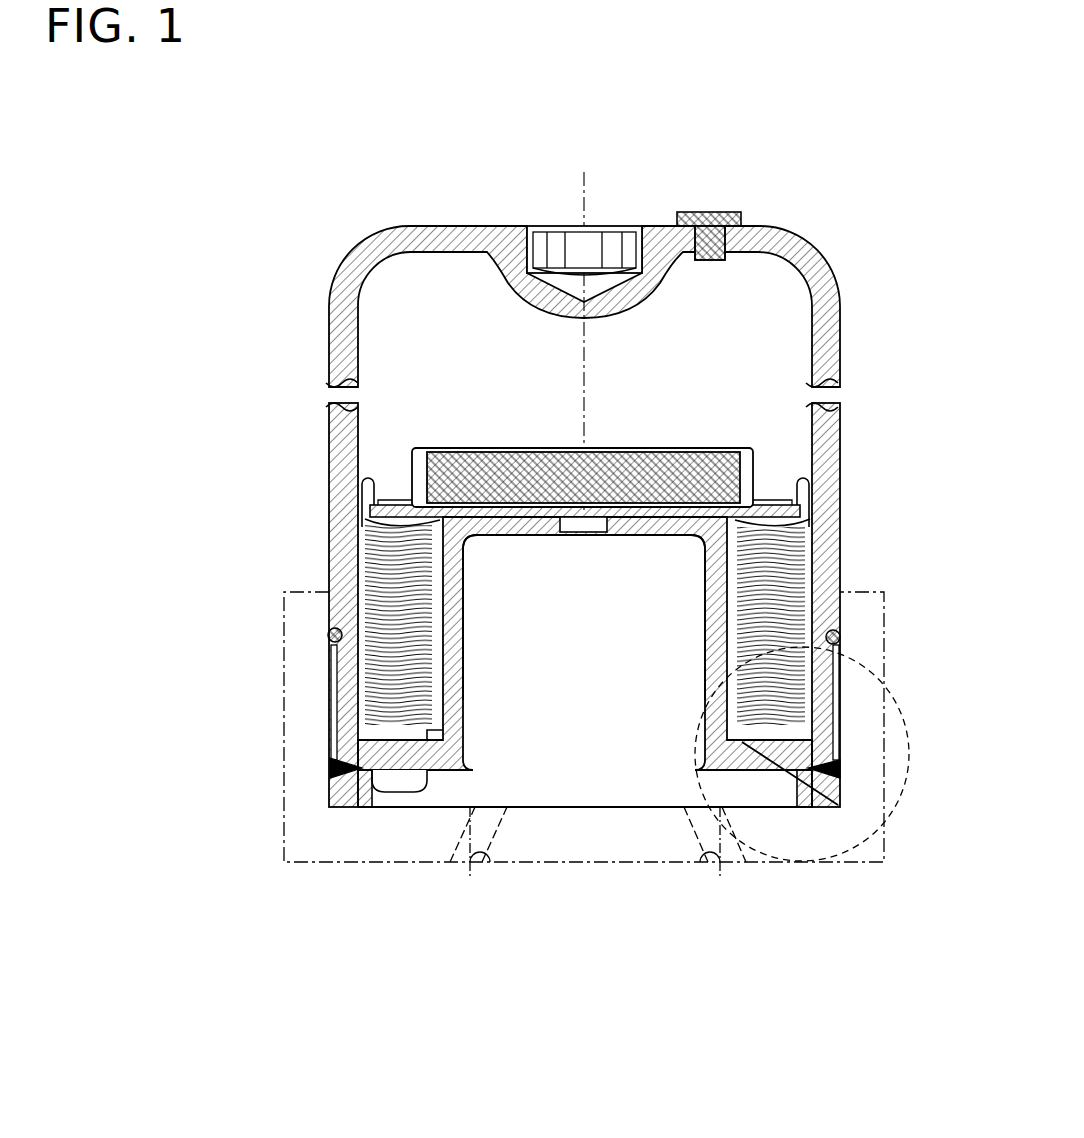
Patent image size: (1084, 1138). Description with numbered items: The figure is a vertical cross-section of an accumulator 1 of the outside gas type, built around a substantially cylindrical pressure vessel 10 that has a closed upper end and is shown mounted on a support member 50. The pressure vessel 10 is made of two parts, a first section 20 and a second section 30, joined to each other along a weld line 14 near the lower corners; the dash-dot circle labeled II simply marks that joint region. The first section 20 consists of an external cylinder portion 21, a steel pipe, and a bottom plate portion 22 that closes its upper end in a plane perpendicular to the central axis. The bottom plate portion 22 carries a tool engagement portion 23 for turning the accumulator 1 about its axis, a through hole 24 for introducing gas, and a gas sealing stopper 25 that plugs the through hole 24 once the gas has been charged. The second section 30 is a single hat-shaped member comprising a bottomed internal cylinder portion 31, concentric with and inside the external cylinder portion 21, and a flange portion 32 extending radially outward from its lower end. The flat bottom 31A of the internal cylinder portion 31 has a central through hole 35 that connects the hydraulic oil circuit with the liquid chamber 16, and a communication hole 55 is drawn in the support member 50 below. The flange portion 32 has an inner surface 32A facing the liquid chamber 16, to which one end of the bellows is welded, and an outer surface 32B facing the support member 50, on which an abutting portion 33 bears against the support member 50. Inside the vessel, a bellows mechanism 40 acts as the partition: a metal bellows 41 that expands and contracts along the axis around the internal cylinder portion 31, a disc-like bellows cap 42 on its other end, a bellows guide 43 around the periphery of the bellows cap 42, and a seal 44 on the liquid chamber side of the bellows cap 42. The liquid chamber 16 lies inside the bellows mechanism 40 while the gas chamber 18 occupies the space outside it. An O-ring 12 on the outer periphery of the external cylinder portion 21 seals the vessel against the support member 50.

The accumulator 1 is at (596, 79).
The pressure vessel 10 is at (105, 795).
The O-ring 12 is at (842, 635).
The weld line 14 is at (845, 770).
The liquid chamber 16 is at (395, 530).
The gas chamber 18 is at (775, 312).
The first section 20 is at (201, 210).
The external cylinder portion 21 is at (329, 300).
The bottom plate portion 22 is at (410, 226).
The tool engagement portion 23 is at (548, 222).
The through hole 24 is at (720, 260).
The gas sealing stopper 25 is at (712, 212).
The second section 30 is at (158, 607).
The internal cylinder portion 31 is at (452, 572).
The bottom 31A is at (503, 537).
The flange portion 32 is at (216, 713).
The inner surface 32A is at (427, 732).
The outer surface 32B is at (415, 772).
The abutting portion 33 is at (356, 808).
The through hole 35 is at (592, 535).
The bellows mechanism 40 is at (907, 375).
The bellows 41 is at (803, 563).
The bellows cap 42 is at (718, 448).
The bellows guide 43 is at (803, 478).
The seal 44 is at (790, 515).
The support member 50 is at (565, 843).
The communication hole 55 is at (470, 875).
The enlarged region II is at (905, 693).